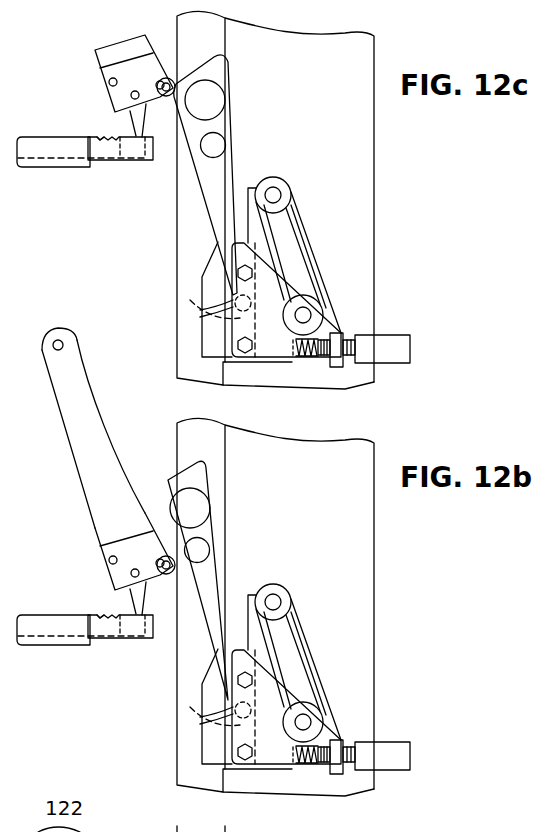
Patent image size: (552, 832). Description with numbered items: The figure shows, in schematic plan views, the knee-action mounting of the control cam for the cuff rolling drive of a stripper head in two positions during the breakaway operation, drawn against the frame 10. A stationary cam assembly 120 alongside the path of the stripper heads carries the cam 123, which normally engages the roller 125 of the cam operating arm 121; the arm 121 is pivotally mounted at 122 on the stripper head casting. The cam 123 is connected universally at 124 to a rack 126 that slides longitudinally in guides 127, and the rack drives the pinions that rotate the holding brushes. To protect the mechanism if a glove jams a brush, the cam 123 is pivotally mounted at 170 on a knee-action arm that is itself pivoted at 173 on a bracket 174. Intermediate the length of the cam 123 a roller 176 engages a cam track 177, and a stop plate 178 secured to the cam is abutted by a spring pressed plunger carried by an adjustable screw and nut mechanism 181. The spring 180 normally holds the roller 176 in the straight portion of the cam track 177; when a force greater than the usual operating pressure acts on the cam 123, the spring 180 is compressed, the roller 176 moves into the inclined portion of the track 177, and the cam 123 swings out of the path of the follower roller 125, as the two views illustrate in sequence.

In FIG. 12C, the wall / frame 10 is at (378, 193).
In FIG. 12B, the wall / frame 10 is at (376, 588).
In FIG. 12C, the cam assembly 120 is at (325, 272).
In FIG. 12B, the cam assembly 120 is at (325, 678).
In FIG. 12C, the cam operating arm 121 is at (104, 79).
In FIG. 12B, the cam operating arm 121 is at (65, 427).
In FIG. 12B, the pivot 122 is at (56, 341).
In FIG. 12C, the cam 123 is at (230, 86).
In FIG. 12B, the cam 123 is at (160, 483).
In FIG. 12C, the universal connection 124 is at (138, 162).
In FIG. 12B, the universal connection 124 is at (140, 640).
In FIG. 12C, the roller 125 is at (176, 67).
In FIG. 12B, the roller 125 is at (172, 578).
In FIG. 12C, the rack 126 is at (106, 133).
In FIG. 12B, the rack 126 is at (104, 612).
In FIG. 12C, the guides 127 is at (73, 168).
In FIG. 12B, the guides 127 is at (73, 645).
In FIG. 12C, the pivot 170 is at (312, 311).
In FIG. 12B, the pivot 170 is at (312, 718).
In FIG. 12C, the pivot 173 is at (273, 180).
In FIG. 12B, the pivot 173 is at (273, 587).
In FIG. 12C, the bracket 174 is at (310, 237).
In FIG. 12B, the bracket 174 is at (310, 644).
In FIG. 12C, the roller 176 is at (197, 313).
In FIG. 12B, the roller 176 is at (197, 720).
In FIG. 12C, the cam track 177 is at (233, 318).
In FIG. 12B, the cam track 177 is at (233, 725).
In FIG. 12C, the stop plate 178 is at (300, 360).
In FIG. 12B, the stop plate 178 is at (300, 767).
In FIG. 12C, the spring 180 is at (312, 358).
In FIG. 12B, the spring 180 is at (312, 765).
In FIG. 12C, the adjustable screw and nut mechanism 181 is at (385, 366).
In FIG. 12B, the adjustable screw and nut mechanism 181 is at (385, 773).